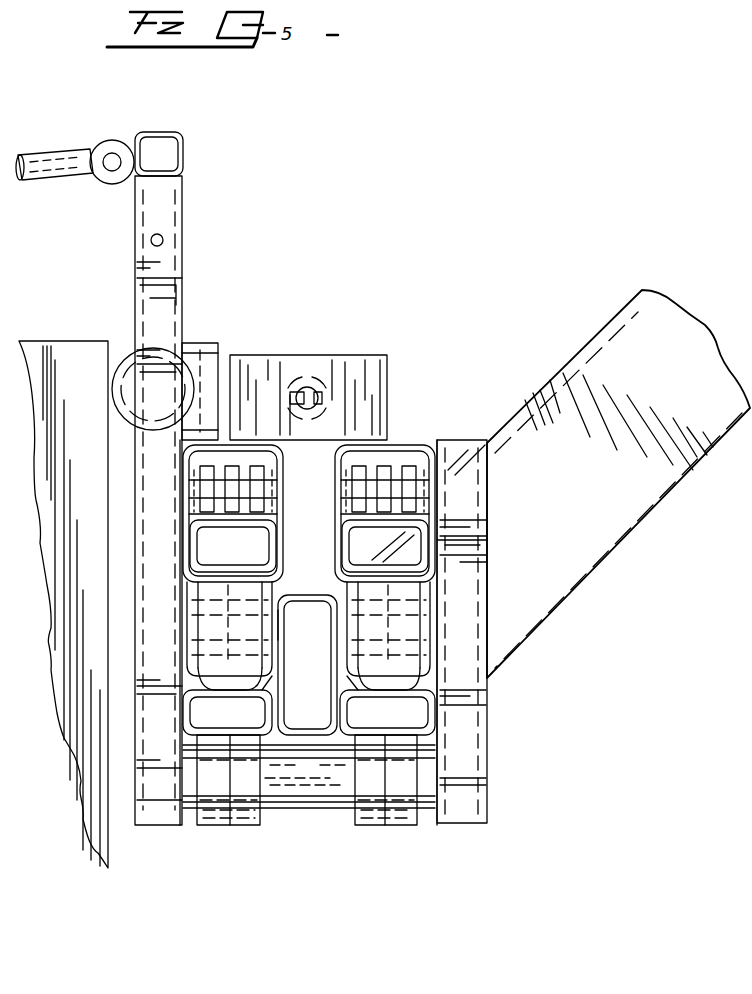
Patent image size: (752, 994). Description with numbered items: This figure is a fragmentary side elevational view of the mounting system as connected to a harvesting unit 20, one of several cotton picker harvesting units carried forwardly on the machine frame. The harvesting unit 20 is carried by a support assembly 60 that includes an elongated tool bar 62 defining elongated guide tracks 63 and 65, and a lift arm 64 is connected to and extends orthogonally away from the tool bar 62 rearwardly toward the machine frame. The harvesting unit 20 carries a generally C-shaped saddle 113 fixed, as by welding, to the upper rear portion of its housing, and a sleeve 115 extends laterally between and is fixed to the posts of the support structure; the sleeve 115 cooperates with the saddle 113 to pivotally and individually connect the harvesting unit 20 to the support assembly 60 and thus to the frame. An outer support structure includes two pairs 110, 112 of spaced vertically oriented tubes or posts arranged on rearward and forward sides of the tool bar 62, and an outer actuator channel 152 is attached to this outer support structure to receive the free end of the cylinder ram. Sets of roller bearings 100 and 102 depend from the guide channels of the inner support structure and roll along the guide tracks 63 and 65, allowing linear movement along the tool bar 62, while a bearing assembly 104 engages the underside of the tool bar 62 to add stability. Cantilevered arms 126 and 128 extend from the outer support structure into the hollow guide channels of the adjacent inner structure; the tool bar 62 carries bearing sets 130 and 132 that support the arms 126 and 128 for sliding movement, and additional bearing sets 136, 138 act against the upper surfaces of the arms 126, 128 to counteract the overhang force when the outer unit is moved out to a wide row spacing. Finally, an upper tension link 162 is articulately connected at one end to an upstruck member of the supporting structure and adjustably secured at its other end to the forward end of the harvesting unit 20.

The cotton picker harvesting unit 20 is at (82, 340).
The support assembly 60 is at (297, 837).
The tool bar 62 is at (322, 572).
The guide track 63 is at (358, 678).
The lift arm 64 is at (590, 494).
The guide track 65 is at (236, 689).
The set of roller bearings 100 is at (420, 675).
The set of roller bearings 102 is at (216, 690).
The bearing assembly 104 is at (380, 827).
The pair of posts 110 is at (488, 813).
The pair of posts 112 is at (168, 826).
The saddle 113 is at (183, 343).
The sleeve 115 is at (188, 378).
The cantilevered arm 126 is at (352, 534).
The cantilevered arm 128 is at (270, 532).
The set of roller bearings 130 is at (424, 607).
The set of roller bearings 132 is at (268, 607).
The set of roller bearings 136 is at (407, 462).
The set of roller bearings 138 is at (255, 461).
The outer actuator channel 152 is at (372, 357).
The upper tension link 162 is at (58, 158).